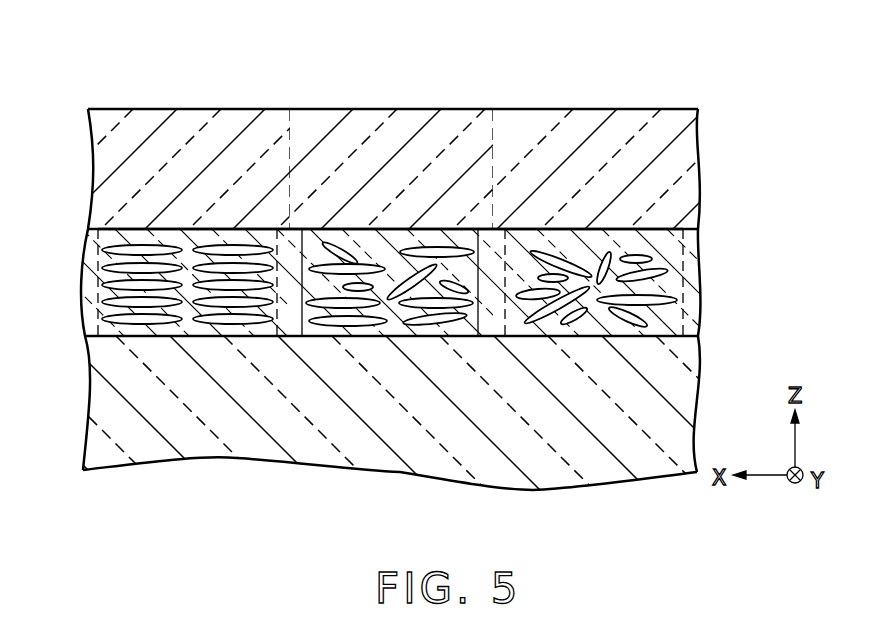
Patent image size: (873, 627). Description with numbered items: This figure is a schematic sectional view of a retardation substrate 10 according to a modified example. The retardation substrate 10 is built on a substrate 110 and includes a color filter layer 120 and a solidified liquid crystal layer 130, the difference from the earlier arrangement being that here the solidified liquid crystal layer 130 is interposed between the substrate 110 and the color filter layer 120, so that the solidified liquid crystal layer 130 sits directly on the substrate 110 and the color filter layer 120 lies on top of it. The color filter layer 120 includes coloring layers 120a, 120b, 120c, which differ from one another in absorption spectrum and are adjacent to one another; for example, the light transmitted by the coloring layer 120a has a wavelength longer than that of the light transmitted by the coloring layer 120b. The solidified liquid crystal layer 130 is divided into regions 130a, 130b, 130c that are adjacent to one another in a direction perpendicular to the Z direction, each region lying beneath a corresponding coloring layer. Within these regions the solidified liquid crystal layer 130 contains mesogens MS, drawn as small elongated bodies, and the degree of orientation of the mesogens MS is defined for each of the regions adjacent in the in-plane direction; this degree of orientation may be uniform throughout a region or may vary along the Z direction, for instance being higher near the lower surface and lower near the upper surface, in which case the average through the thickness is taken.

The retardation substrate 10 is at (435, 263).
The substrate 110 is at (93, 370).
The color filter layer 120 is at (396, 136).
The coloring layer 120a is at (177, 112).
The coloring layer 120b is at (362, 118).
The coloring layer 120c is at (567, 118).
The solidified liquid crystal layer 130 is at (411, 190).
The region 130a is at (194, 246).
The region 130b is at (399, 244).
The region 130c is at (590, 244).
The mesogens MS is at (133, 246).